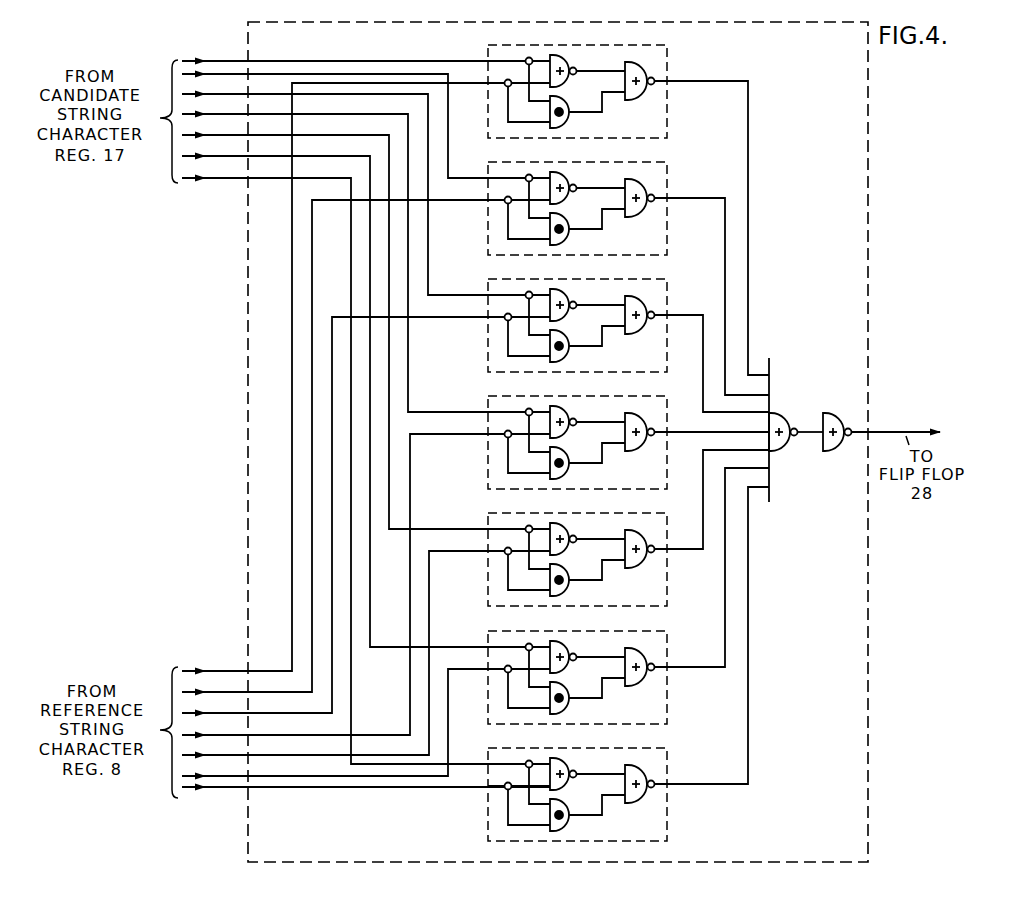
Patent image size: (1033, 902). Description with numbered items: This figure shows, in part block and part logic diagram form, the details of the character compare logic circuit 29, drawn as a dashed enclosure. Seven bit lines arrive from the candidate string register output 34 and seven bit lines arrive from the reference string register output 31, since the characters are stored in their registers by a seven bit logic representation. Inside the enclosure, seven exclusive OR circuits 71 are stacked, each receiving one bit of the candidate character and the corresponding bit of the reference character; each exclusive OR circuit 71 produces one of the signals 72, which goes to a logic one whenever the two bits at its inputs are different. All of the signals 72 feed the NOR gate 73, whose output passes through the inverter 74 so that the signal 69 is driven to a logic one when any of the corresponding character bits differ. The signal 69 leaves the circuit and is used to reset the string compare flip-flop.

The character compare logic circuit 29 is at (866, 125).
The candidate string register output 34 is at (188, 57).
The reference string register output 31 is at (189, 665).
The exclusive OR circuits 71 is at (666, 62).
The signals 72 is at (706, 83).
The NOR gate 73 is at (779, 414).
The inverter 74 is at (826, 412).
The signal 69 is at (888, 430).